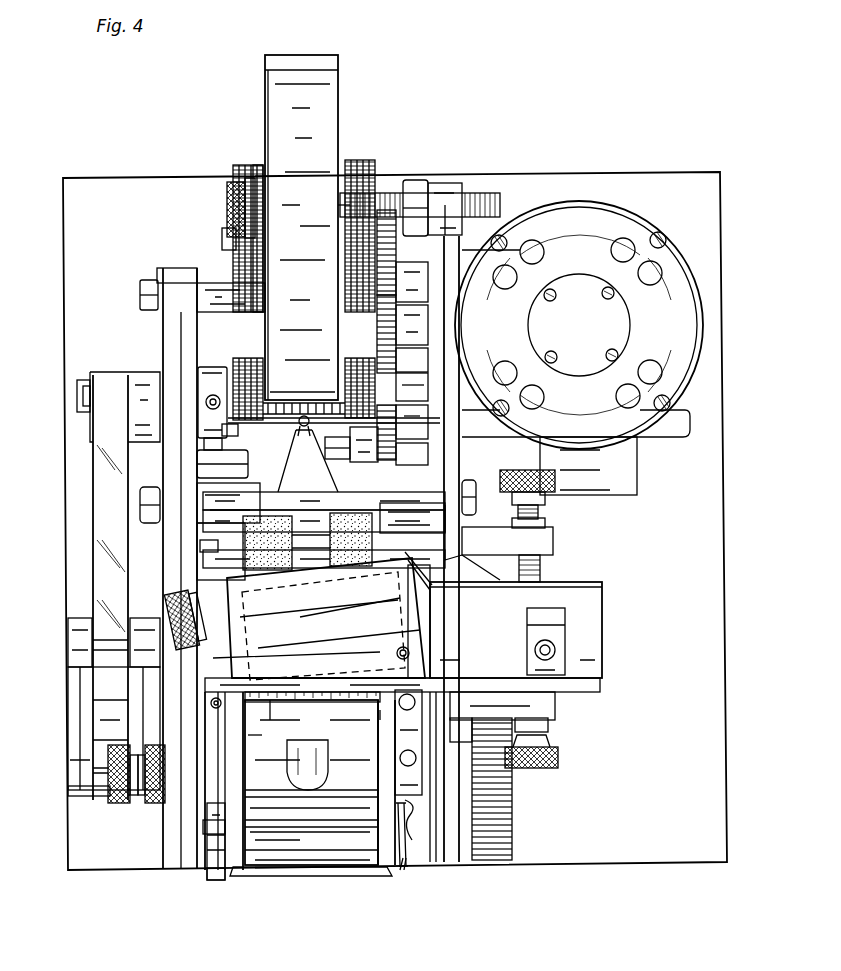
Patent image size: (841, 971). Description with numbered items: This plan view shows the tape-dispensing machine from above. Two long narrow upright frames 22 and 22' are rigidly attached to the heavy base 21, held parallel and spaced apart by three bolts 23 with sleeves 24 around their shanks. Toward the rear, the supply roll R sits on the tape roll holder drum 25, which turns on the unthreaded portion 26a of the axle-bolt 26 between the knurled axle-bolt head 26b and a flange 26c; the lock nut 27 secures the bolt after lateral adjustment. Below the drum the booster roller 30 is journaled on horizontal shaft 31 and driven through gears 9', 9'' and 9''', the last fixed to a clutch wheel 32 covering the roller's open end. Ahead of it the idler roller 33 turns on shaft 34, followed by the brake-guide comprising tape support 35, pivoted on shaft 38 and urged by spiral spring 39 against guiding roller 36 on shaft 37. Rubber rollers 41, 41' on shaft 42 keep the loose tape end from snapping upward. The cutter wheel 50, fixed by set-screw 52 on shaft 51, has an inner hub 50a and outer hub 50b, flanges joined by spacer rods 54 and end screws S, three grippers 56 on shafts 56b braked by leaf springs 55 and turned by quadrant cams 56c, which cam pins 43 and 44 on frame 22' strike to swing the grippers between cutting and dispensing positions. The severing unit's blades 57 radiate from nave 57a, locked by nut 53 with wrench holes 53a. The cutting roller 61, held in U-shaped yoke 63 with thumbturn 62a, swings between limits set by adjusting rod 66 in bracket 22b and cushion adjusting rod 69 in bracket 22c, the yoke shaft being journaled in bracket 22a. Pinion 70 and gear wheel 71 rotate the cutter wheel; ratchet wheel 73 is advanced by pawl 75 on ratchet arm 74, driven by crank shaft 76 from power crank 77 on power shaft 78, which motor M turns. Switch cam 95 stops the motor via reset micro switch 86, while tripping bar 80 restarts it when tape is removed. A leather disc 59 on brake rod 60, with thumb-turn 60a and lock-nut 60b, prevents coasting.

The base 21 is at (708, 172).
The supply roll R is at (300, 68).
The booster roller 30 is at (258, 168).
The tape roll holder drum 25 is at (264, 186).
The axle-bolt head 26b is at (226, 190).
The unthreaded portion of axle-bolt 26a is at (256, 208).
The flange 26c is at (337, 212).
The horizontal shaft 31 is at (222, 242).
The idler roller 33 is at (265, 360).
The clutch wheel 32 is at (375, 175).
The gear 9''' is at (410, 252).
The gear 9'' is at (397, 334).
The gear 9' is at (399, 432).
The horizontal shaft 34 is at (416, 385).
The axle-bolt 26 is at (495, 200).
The lock nut 27 is at (412, 188).
The worm gear reduction motor M is at (596, 212).
The upright frame 22 is at (474, 569).
The bolt 23 is at (140, 290).
The upright frame 22' is at (154, 568).
The sleeve 24 is at (218, 283).
The crank shaft 76 is at (105, 533).
The power crank 77 is at (143, 380).
The switch cam 95 is at (211, 372).
The power shaft 78 is at (232, 426).
The reset micro switch 86 is at (240, 460).
The cam pin 44 is at (204, 552).
The guiding roller 36 is at (305, 520).
The spiral spring 39 is at (352, 440).
The tape support 35 is at (320, 478).
The horizontal shaft 38 is at (392, 498).
The shaft 37 is at (438, 520).
The idler roller 41 is at (267, 560).
The rubber roller 41' is at (332, 557).
The shaft 42 is at (412, 558).
The bracket 22c is at (545, 540).
The cushion adjusting rod 69 is at (540, 568).
The bracket 22a is at (590, 636).
The cutting roller 61 is at (338, 612).
The U-shaped yoke 63 is at (318, 640).
The thumbturn 62a is at (176, 600).
The cutter wheel shaft 51 is at (430, 696).
The blade 57 is at (326, 692).
The nave 57a is at (290, 692).
The adjusting rod 66 is at (535, 680).
The bracket 22b is at (548, 703).
The pinion 70 is at (485, 738).
The gear wheel 71 is at (505, 818).
The cutter wheel 50 is at (252, 813).
The outer hub portion 50b is at (236, 738).
The inner hub portion 50a is at (384, 712).
The set-screw 52 is at (222, 704).
The brake disc 59 is at (220, 778).
The lock nut 53 is at (398, 773).
The radial holes 53a is at (402, 752).
The spacer rod 54 is at (335, 812).
The end screw S is at (406, 820).
The leaf spring 55 is at (410, 840).
The gripper shaft 56b is at (402, 848).
The tripping bar 80 is at (338, 876).
The gripper 56 is at (294, 852).
The cam 56c is at (212, 878).
The cam pin 43 is at (212, 818).
The ratchet arm 74 is at (145, 640).
The ratchet wheel 73 is at (108, 718).
The lock-nut 60b is at (132, 808).
The brake rod 60 is at (205, 785).
The thumb-turn 60a is at (100, 770).
The pawl 75 is at (102, 791).